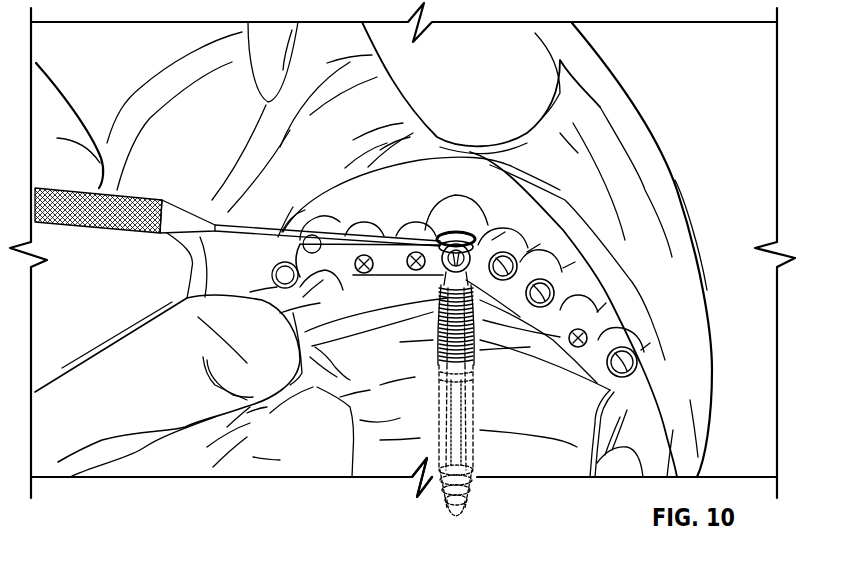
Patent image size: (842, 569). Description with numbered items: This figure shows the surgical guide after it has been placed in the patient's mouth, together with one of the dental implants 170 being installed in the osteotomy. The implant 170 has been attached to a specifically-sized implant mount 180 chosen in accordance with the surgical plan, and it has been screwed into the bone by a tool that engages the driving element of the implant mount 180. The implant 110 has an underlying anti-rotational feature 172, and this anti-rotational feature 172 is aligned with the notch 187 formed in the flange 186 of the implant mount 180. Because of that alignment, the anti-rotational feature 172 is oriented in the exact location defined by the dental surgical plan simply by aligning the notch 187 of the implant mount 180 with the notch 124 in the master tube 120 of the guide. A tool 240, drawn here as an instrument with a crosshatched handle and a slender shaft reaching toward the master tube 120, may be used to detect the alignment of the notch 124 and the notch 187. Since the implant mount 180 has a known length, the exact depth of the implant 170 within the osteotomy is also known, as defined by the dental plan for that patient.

The implant 110 is at (536, 264).
The master tube 120 is at (458, 226).
The notch 124 is at (422, 245).
The dental implant 170 is at (480, 326).
The anti-rotational feature 172 is at (470, 372).
The implant mount 180 is at (478, 424).
The flange 186 is at (413, 490).
The notch 187 is at (478, 486).
The tool 240 is at (116, 237).